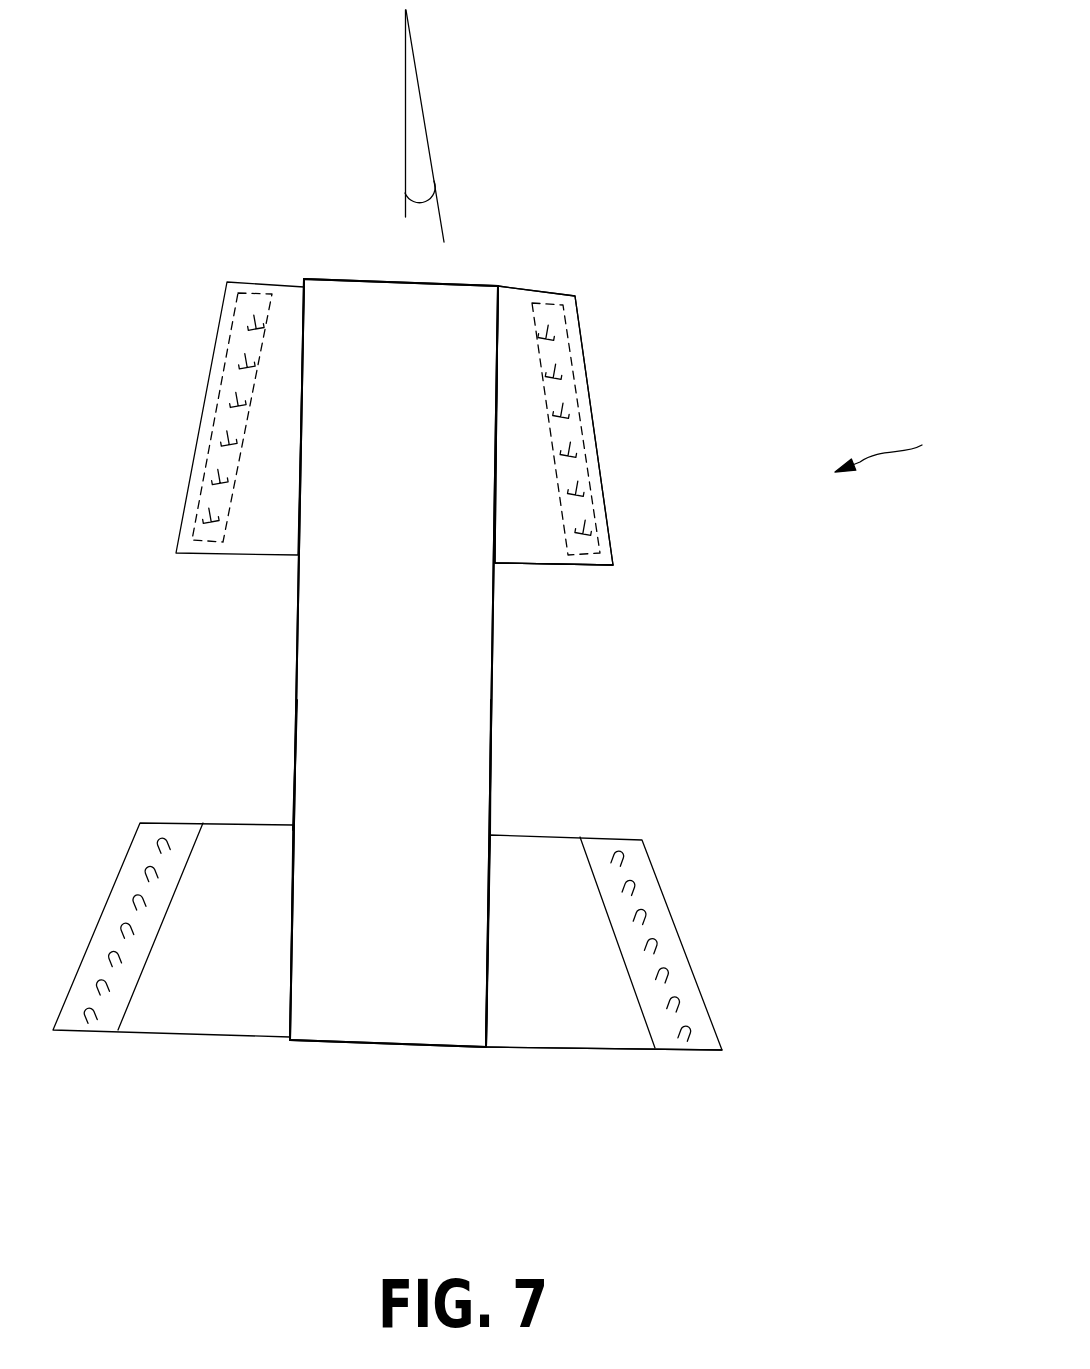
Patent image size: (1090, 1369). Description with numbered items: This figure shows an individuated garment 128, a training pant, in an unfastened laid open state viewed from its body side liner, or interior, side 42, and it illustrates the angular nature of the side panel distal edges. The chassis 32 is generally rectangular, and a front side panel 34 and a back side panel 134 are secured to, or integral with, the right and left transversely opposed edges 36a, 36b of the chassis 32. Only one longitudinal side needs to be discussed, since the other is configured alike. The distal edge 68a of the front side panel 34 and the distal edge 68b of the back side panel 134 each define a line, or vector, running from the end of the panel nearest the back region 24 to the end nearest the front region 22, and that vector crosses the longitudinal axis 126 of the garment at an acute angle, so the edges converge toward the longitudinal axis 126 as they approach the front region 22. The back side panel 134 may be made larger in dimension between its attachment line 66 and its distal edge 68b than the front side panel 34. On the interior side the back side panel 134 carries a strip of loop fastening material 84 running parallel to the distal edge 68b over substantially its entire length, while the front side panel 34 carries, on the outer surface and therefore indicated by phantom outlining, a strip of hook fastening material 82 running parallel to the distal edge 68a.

The longitudinal axis 126 is at (502, 178).
The front region 22 is at (488, 283).
The back region 24 is at (437, 1047).
The chassis 32 is at (330, 650).
The interior side 42 is at (457, 657).
The front side panel 34 is at (522, 412).
The right transversely opposed edge 36a is at (492, 780).
The left transversely opposed edge 36b is at (293, 775).
The attachment line 66 is at (487, 958).
The distal edge of front side panel 68a is at (602, 470).
The distal edge of back side panel 68b is at (685, 953).
The strip of hook fastening material 82 is at (588, 567).
The strip of loop fastening material 84 is at (705, 1038).
The individuated garment 128 is at (900, 436).
The back side panel 134 is at (213, 850).